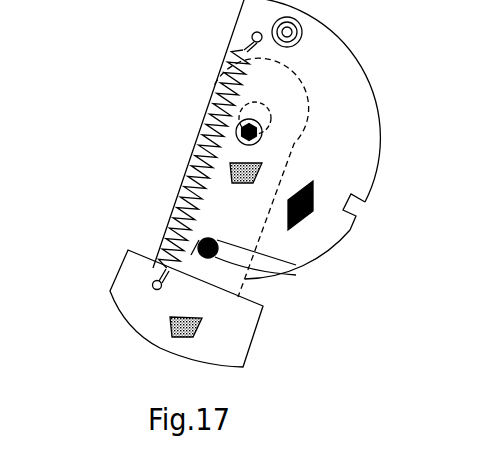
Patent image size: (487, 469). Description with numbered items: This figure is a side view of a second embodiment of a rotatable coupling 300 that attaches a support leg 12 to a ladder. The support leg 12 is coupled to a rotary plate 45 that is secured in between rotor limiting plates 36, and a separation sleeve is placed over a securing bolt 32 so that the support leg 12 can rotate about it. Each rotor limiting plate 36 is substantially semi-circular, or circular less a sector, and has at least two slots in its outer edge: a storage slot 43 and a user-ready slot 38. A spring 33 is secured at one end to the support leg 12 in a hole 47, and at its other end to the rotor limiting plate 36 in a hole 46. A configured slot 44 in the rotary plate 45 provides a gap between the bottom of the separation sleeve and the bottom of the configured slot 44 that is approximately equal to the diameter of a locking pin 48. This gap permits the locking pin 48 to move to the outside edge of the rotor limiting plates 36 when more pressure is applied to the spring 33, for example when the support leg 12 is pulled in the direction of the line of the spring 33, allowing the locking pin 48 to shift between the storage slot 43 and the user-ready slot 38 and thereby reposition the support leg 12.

The rotatable coupling 300 is at (266, 139).
The support leg 12 is at (223, 333).
The securing bolt 32 is at (257, 138).
The spring 33 is at (213, 127).
The rotor limiting plate 36 is at (293, 247).
The user-ready slot 38 is at (224, 243).
The storage slot 43 is at (353, 208).
The configured slot 44 is at (262, 118).
The rotary plate 45 is at (265, 172).
The hole 46 is at (252, 35).
The hole 47 is at (152, 286).
The locking pin 48 is at (217, 257).